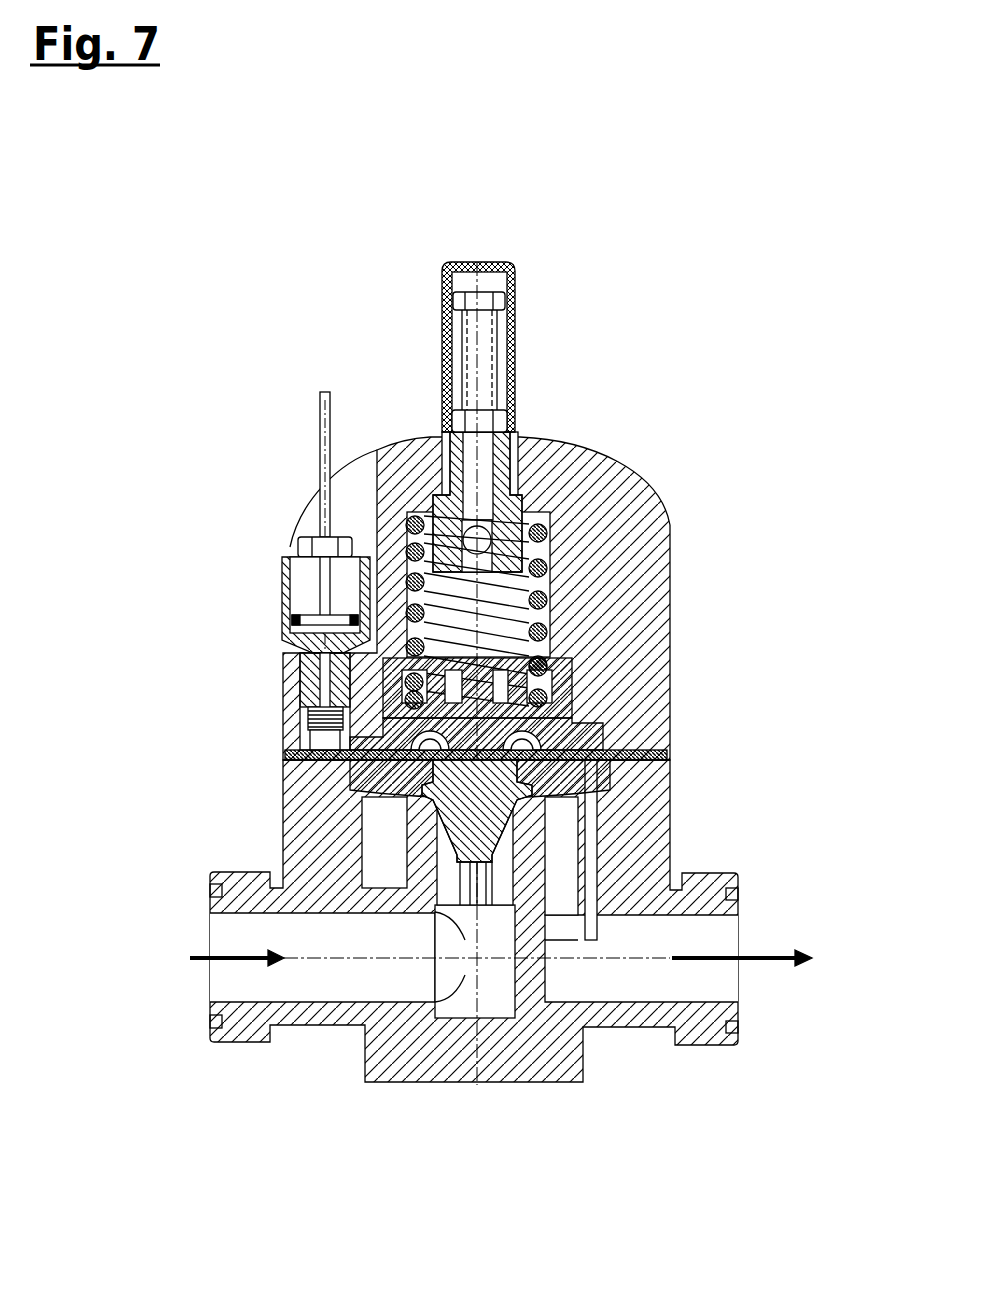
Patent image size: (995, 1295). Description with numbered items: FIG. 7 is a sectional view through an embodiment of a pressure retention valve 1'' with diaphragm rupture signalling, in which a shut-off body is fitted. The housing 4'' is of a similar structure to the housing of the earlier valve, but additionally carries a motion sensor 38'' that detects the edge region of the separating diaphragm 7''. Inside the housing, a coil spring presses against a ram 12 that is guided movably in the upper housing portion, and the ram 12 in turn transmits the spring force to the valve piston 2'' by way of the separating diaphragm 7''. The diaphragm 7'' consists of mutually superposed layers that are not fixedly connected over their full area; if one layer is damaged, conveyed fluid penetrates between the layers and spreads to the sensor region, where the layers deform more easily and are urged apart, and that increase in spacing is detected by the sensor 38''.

The pressure retention valve 1'' is at (501, 581).
The valve piston 2'' is at (623, 832).
The housing 4'' is at (375, 741).
The separating diaphragm 7'' is at (577, 687).
The ram 12 is at (553, 686).
The motion sensor 38'' is at (231, 571).